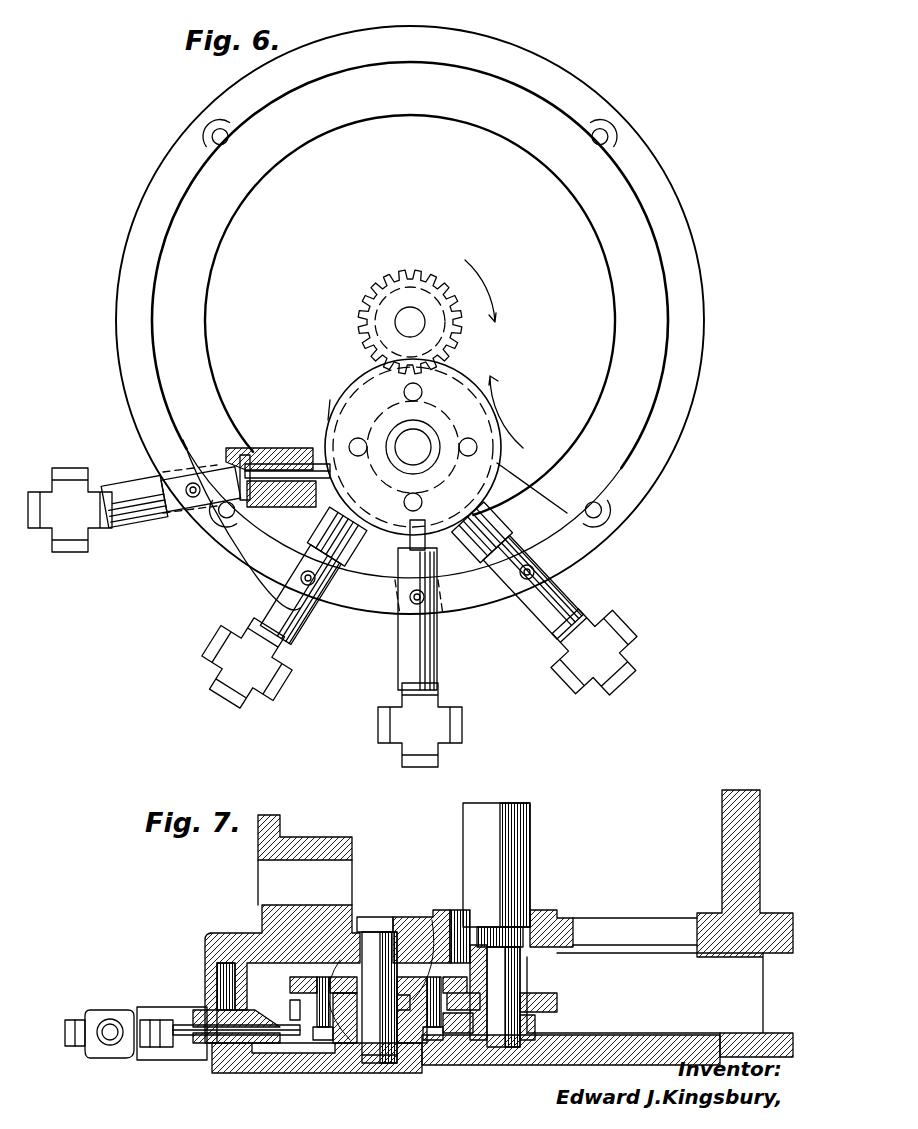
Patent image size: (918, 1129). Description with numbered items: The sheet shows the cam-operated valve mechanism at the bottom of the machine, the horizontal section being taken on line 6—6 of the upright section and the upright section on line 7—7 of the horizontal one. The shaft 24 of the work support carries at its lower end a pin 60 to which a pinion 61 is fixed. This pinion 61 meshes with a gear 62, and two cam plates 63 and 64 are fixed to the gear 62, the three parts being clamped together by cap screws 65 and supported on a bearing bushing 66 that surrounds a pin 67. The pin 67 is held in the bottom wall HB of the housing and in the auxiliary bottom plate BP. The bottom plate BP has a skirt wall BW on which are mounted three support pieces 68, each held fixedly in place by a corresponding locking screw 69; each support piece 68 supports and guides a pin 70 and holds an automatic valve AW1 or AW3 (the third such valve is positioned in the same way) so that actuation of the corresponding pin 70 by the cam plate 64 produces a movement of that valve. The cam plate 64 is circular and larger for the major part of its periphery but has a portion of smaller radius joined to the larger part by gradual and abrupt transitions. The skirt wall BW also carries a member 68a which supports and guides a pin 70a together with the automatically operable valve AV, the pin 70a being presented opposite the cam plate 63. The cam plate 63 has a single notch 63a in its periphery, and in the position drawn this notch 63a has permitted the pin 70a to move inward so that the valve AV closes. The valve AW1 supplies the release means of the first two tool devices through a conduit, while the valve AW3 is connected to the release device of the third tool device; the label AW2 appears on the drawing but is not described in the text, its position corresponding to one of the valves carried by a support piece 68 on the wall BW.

In FIG. 6, the section line 7— 7 is at (403, 290).
In FIG. 7, the section line 6— 6 is at (179, 969).
In FIG. 6, the pin 60 is at (398, 318).
In FIG. 7, the pin 60 is at (505, 978).
In FIG. 6, the pinion 61 is at (410, 280).
In FIG. 7, the pinion 61 is at (557, 1000).
In FIG. 6, the cam plate 63 is at (462, 373).
In FIG. 7, the cam plate 63 is at (340, 960).
In FIG. 6, the notch 63a is at (338, 505).
In FIG. 6, the pin 70 is at (315, 440).
In FIG. 7, the pin 70 is at (205, 1040).
In FIG. 6, the pin 70a is at (348, 548).
In FIG. 6, the locking screw 69 is at (193, 482).
In FIG. 7, the locking screw 69 is at (200, 1012).
In FIG. 6, the support piece 68 is at (130, 520).
In FIG. 7, the support piece 68 is at (238, 983).
In FIG. 6, the member 68a is at (262, 618).
In FIG. 6, the automatic valve AW1 is at (65, 525).
In FIG. 7, the automatic valve AW1 is at (100, 1010).
In FIG. 6, the abrading wheel 2 AW2 is at (612, 658).
In FIG. 6, the automatic valve AW3 is at (438, 710).
In FIG. 6, the automatically operable valve AV is at (268, 670).
In FIG. 6, the skirt wall BW is at (690, 340).
In FIG. 7, the skirt wall BW is at (770, 990).
In FIG. 6, the auxiliary bottom plate BP is at (640, 418).
In FIG. 7, the auxiliary bottom plate BP is at (275, 1068).
In FIG. 7, the shaft 24 is at (533, 855).
In FIG. 7, the bottom wall HB is at (420, 935).
In FIG. 7, the gear 62 is at (412, 1000).
In FIG. 7, the cam plate 64 is at (460, 1033).
In FIG. 7, the cap screw 65 is at (330, 1040).
In FIG. 7, the bearing bushing 66 is at (352, 1043).
In FIG. 7, the pin 67 is at (378, 1052).